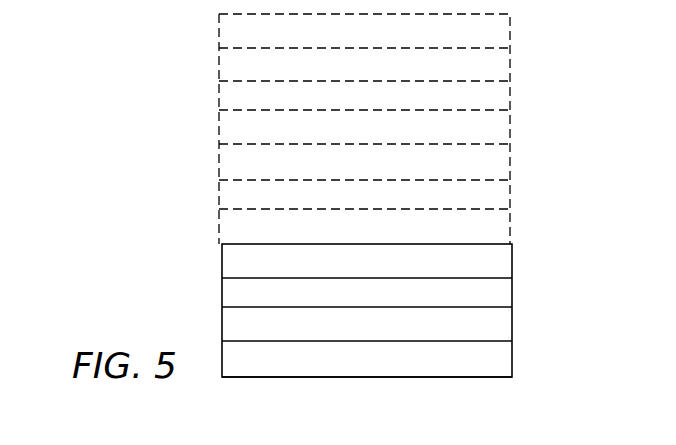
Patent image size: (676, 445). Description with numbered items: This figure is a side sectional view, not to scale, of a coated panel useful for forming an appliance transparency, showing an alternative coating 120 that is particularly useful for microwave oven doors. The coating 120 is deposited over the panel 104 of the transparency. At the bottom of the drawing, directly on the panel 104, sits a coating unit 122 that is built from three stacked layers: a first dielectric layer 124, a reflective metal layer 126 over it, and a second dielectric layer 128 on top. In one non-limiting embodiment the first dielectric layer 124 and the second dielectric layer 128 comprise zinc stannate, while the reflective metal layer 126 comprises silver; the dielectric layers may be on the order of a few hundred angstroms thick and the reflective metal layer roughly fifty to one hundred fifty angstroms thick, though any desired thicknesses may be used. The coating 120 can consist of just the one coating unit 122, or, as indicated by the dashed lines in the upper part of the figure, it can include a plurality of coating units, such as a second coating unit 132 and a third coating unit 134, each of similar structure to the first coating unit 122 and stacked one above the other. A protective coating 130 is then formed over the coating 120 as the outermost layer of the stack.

The coating 120 is at (148, 58).
The protective coating 130 is at (500, 30).
The third coating unit 134 is at (213, 48).
The second coating unit 132 is at (213, 145).
The coating unit 122 is at (214, 246).
The second dielectric layer 128 is at (498, 262).
The reflective metal layer 126 is at (498, 291).
The first dielectric layer 124 is at (498, 325).
The panel 104 is at (498, 357).